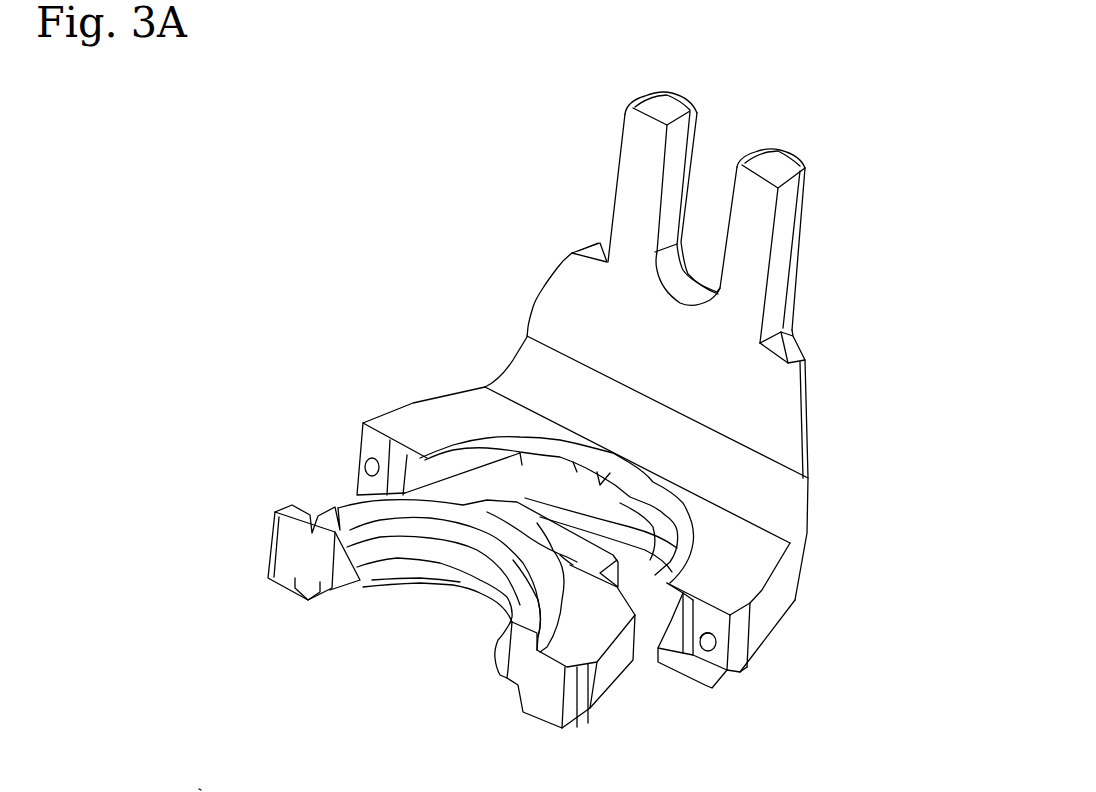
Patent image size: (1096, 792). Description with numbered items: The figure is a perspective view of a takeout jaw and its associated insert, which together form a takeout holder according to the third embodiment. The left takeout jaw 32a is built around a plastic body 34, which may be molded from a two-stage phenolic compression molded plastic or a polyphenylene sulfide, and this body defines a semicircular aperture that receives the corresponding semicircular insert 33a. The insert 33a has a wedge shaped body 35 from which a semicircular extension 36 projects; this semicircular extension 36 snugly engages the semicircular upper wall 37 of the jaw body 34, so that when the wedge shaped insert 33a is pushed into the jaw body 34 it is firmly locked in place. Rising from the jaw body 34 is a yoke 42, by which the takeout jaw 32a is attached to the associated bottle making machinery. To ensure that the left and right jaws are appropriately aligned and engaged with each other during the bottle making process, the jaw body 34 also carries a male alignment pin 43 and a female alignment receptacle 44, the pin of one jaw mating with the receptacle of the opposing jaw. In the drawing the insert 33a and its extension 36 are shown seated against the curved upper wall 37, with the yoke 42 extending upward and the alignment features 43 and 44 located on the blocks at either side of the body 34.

The yoke 42 is at (804, 217).
The left takeout jaw 32a is at (812, 390).
The semicircular upper wall 37 is at (420, 408).
The female alignment receptacle 44 is at (357, 465).
The plastic body 34 is at (765, 597).
The male alignment pin 43 is at (708, 652).
The semicircular extension 36 is at (346, 504).
The wedge shaped body 35 is at (292, 585).
The semicircular insert 33a is at (598, 705).